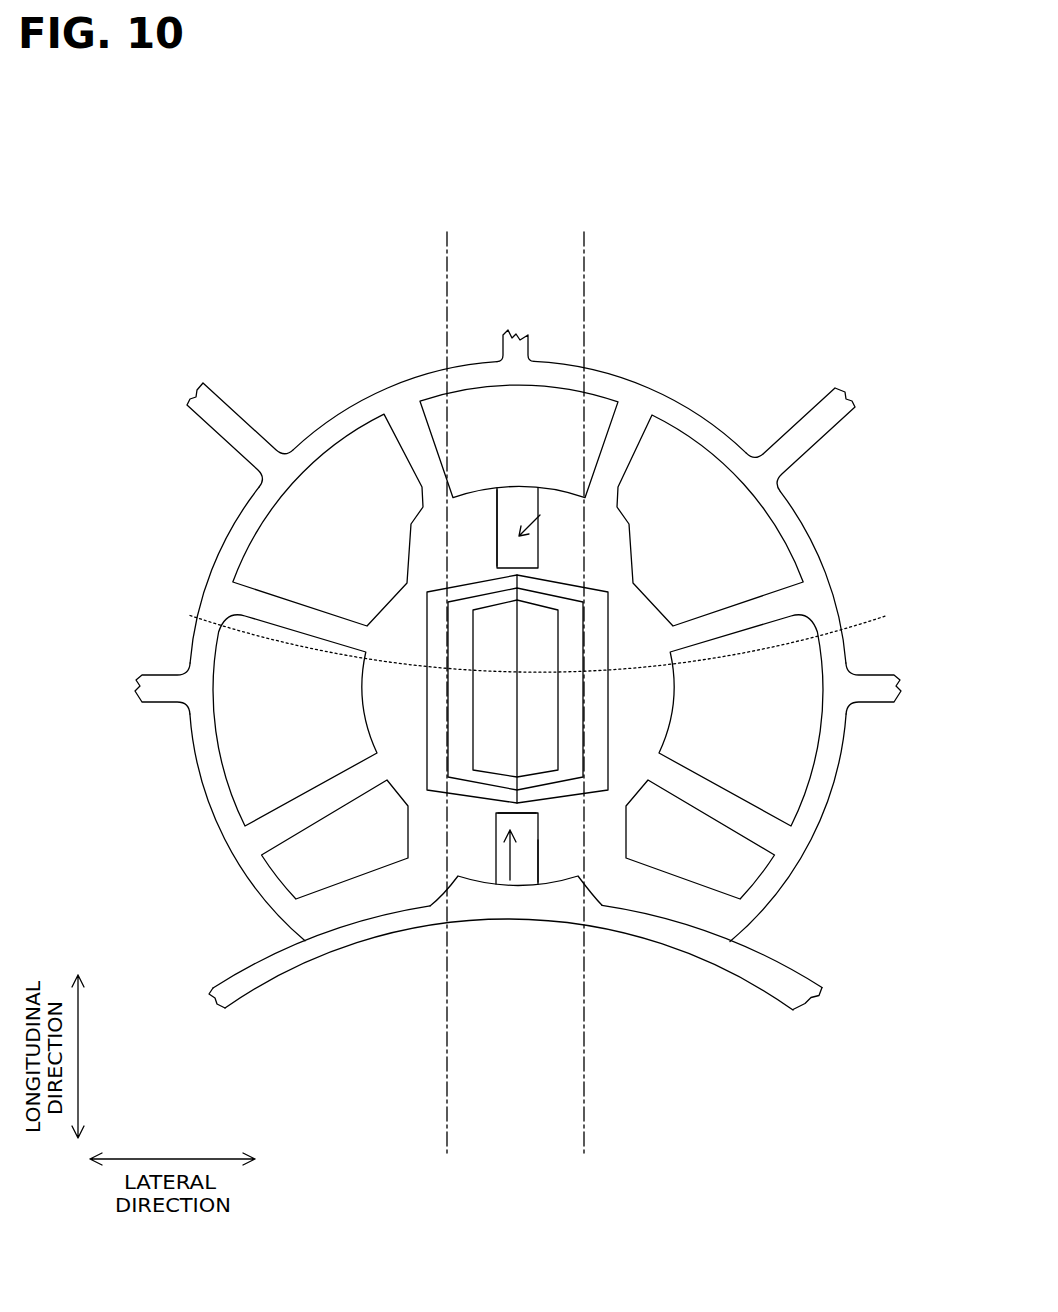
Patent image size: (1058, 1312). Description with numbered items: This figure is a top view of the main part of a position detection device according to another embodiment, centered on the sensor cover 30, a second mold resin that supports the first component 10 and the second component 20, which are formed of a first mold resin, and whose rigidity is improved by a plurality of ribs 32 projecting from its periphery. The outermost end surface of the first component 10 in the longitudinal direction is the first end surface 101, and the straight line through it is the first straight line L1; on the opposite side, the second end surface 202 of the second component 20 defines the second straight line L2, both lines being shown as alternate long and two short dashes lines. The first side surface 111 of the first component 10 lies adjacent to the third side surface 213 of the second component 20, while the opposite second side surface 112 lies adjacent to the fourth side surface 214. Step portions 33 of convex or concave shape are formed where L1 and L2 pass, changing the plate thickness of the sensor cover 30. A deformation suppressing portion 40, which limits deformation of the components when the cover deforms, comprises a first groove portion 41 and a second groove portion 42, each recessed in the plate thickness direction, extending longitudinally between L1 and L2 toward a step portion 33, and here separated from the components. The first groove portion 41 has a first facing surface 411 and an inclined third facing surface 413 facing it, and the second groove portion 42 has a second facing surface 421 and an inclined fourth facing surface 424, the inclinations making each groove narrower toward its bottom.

The first component 10 is at (475, 780).
The first end surface 101 is at (222, 616).
The first side surface 111 is at (420, 497).
The second side surface 112 is at (428, 910).
The second component 20 is at (585, 880).
The second end surface 202 is at (872, 617).
The third side surface 213 is at (625, 425).
The fourth side surface 214 is at (560, 843).
The sensor cover 30 is at (250, 848).
The ribs 32 is at (515, 335).
The step portion 33 is at (566, 375).
The deformation suppressing portion 40 is at (545, 535).
The first groove portion 41 is at (505, 560).
The first facing surface 411 is at (558, 415).
The third facing surface 413 is at (482, 530).
The second groove portion 42 is at (500, 850).
The second facing surface 421 is at (544, 886).
The fourth facing surface 424 is at (521, 815).
The first straight line L1 is at (447, 297).
The second straight line L2 is at (590, 293).